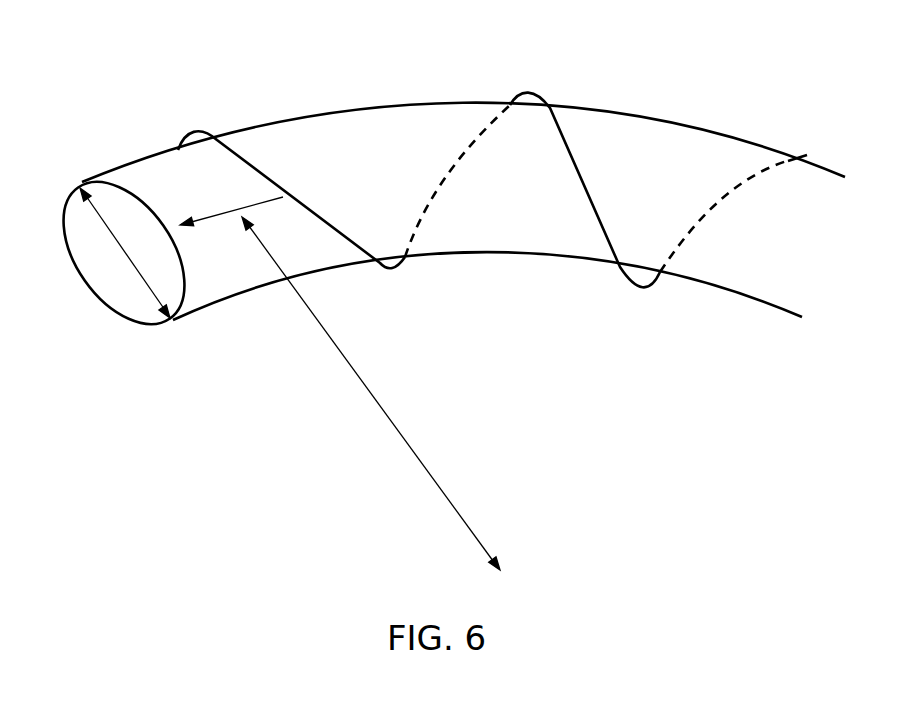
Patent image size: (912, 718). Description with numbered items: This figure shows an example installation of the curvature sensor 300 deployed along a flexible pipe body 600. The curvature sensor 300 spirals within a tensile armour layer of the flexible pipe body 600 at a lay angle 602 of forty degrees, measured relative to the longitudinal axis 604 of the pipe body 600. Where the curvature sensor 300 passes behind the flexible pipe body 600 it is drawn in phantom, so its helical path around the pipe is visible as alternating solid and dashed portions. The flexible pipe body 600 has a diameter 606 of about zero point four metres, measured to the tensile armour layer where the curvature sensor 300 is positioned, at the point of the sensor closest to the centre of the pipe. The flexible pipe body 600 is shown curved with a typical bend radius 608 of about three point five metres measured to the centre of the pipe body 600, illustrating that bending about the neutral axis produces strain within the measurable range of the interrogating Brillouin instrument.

The curvature sensor 300 is at (560, 137).
The flexible pipe body 600 is at (633, 137).
The lay angle 602 is at (248, 187).
The longitudinal axis 604 is at (237, 157).
The diameter 606 is at (127, 262).
The bend radius 608 is at (378, 403).